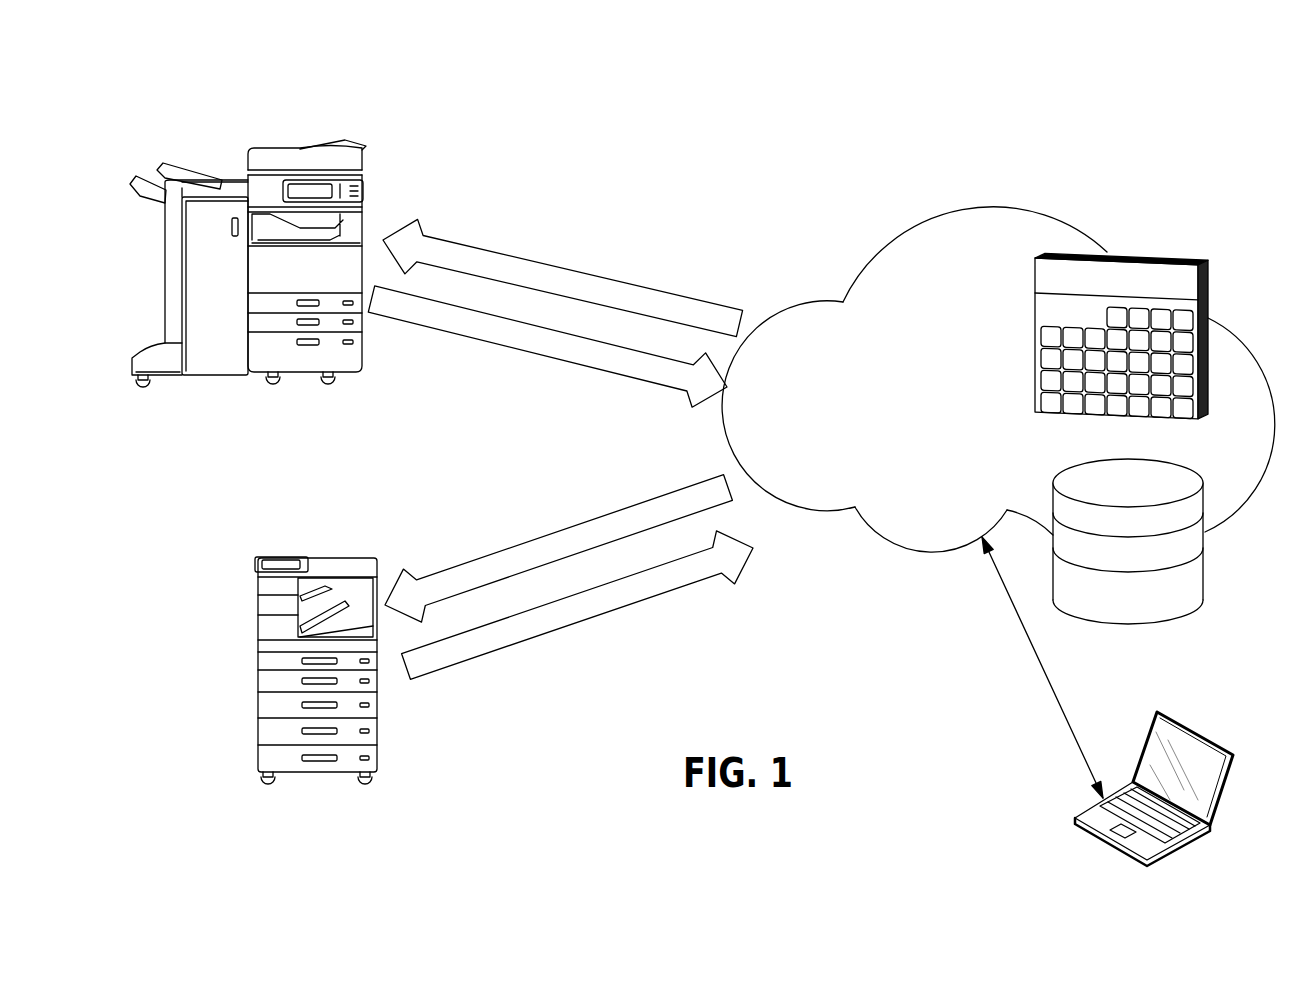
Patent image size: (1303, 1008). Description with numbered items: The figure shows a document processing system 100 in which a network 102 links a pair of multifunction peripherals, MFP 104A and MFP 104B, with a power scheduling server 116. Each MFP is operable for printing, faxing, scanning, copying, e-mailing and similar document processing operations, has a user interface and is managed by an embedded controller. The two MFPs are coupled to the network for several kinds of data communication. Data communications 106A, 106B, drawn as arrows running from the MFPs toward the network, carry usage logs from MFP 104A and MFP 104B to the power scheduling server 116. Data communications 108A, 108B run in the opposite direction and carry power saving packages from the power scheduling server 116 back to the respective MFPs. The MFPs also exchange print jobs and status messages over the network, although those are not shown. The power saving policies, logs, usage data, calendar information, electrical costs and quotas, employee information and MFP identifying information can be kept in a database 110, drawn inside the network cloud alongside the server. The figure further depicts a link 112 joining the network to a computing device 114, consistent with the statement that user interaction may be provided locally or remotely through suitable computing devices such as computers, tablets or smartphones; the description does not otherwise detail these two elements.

The document processing system 100 is at (858, 126).
The network 102 is at (984, 208).
The MFP 104A is at (362, 183).
The MFP 104B is at (366, 557).
The data communication 106A is at (600, 371).
The data communication 106B is at (543, 634).
The data communication 108A is at (528, 257).
The data communication 108B is at (523, 543).
The database 110 is at (1204, 560).
The communication link 112 is at (1057, 700).
The laptop computer 114 is at (1197, 730).
The power scheduling server 116 is at (1209, 314).